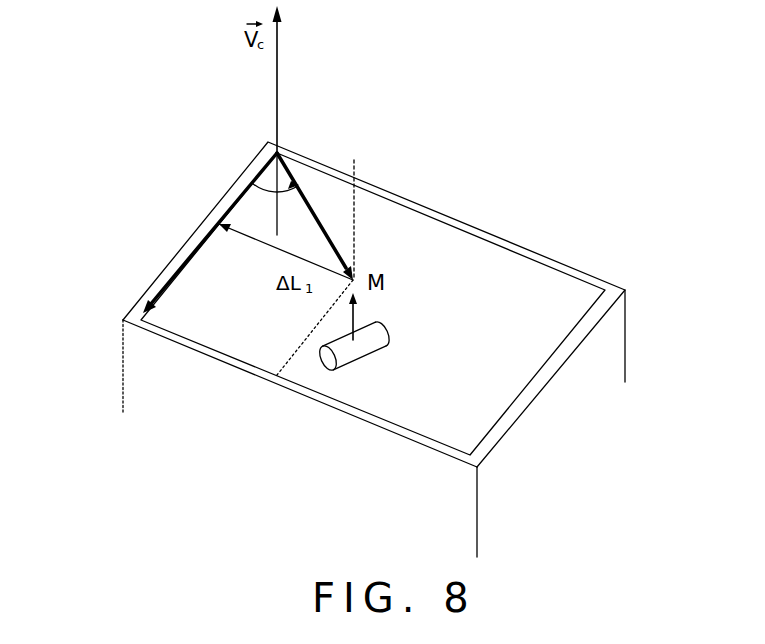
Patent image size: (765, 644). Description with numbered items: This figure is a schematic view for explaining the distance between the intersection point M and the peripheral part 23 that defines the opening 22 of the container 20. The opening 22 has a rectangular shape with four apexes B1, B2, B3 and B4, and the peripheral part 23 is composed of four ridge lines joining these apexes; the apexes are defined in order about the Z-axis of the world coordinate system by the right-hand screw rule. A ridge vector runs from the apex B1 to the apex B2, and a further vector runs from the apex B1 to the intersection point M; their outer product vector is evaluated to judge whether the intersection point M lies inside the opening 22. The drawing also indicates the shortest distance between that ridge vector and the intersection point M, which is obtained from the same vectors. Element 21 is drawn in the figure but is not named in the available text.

The container 20 is at (592, 353).
The sensor 21 is at (380, 336).
The opening 22 is at (492, 297).
The peripheral part 23 is at (228, 350).
The apex B1 is at (282, 152).
The apex B2 is at (140, 313).
The apex B3 is at (440, 452).
The apex B4 is at (603, 282).